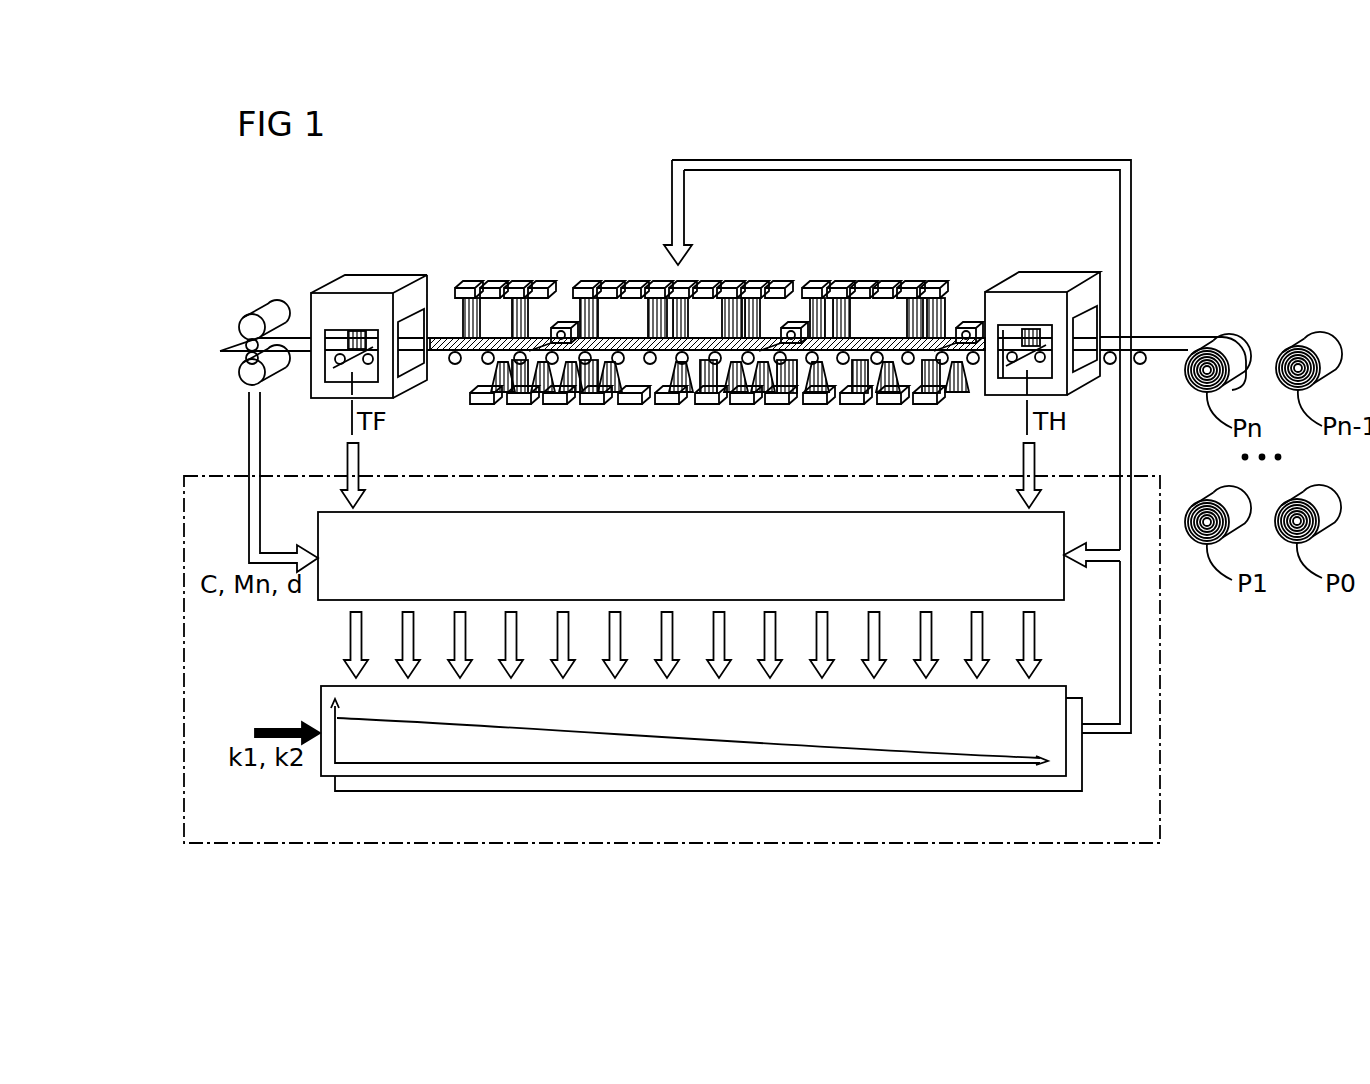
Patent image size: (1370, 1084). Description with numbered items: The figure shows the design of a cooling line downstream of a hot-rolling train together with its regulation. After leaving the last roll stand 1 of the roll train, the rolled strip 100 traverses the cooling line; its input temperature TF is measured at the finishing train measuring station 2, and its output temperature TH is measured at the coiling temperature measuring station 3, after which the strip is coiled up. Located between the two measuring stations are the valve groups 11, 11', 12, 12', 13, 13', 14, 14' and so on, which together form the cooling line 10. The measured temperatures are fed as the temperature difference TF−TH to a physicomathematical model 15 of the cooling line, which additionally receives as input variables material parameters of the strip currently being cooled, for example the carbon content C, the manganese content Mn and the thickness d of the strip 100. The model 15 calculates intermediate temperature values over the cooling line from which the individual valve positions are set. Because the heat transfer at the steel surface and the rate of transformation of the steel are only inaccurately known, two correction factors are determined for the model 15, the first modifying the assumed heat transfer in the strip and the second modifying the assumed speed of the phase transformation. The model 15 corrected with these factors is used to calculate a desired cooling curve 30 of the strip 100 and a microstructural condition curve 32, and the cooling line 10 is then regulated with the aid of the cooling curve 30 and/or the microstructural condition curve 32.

The last roll stand 1 is at (265, 312).
The finishing train measuring station 2 is at (372, 284).
The coiling temperature measuring station 3 is at (1035, 283).
The cooling line 10 is at (957, 232).
The valve group 11 is at (474, 282).
The valve group 11' is at (531, 282).
The valve group 12 is at (583, 282).
The valve group 12' is at (639, 262).
The valve group 13 is at (812, 282).
The valve group 13' is at (861, 282).
The valve group 14 is at (484, 426).
The valve group 14' is at (534, 426).
The physicomathematical model 15 is at (318, 540).
The cooling curve 30 is at (322, 712).
The microstructural condition curve 32 is at (335, 790).
The rolled strip 100 is at (1175, 337).